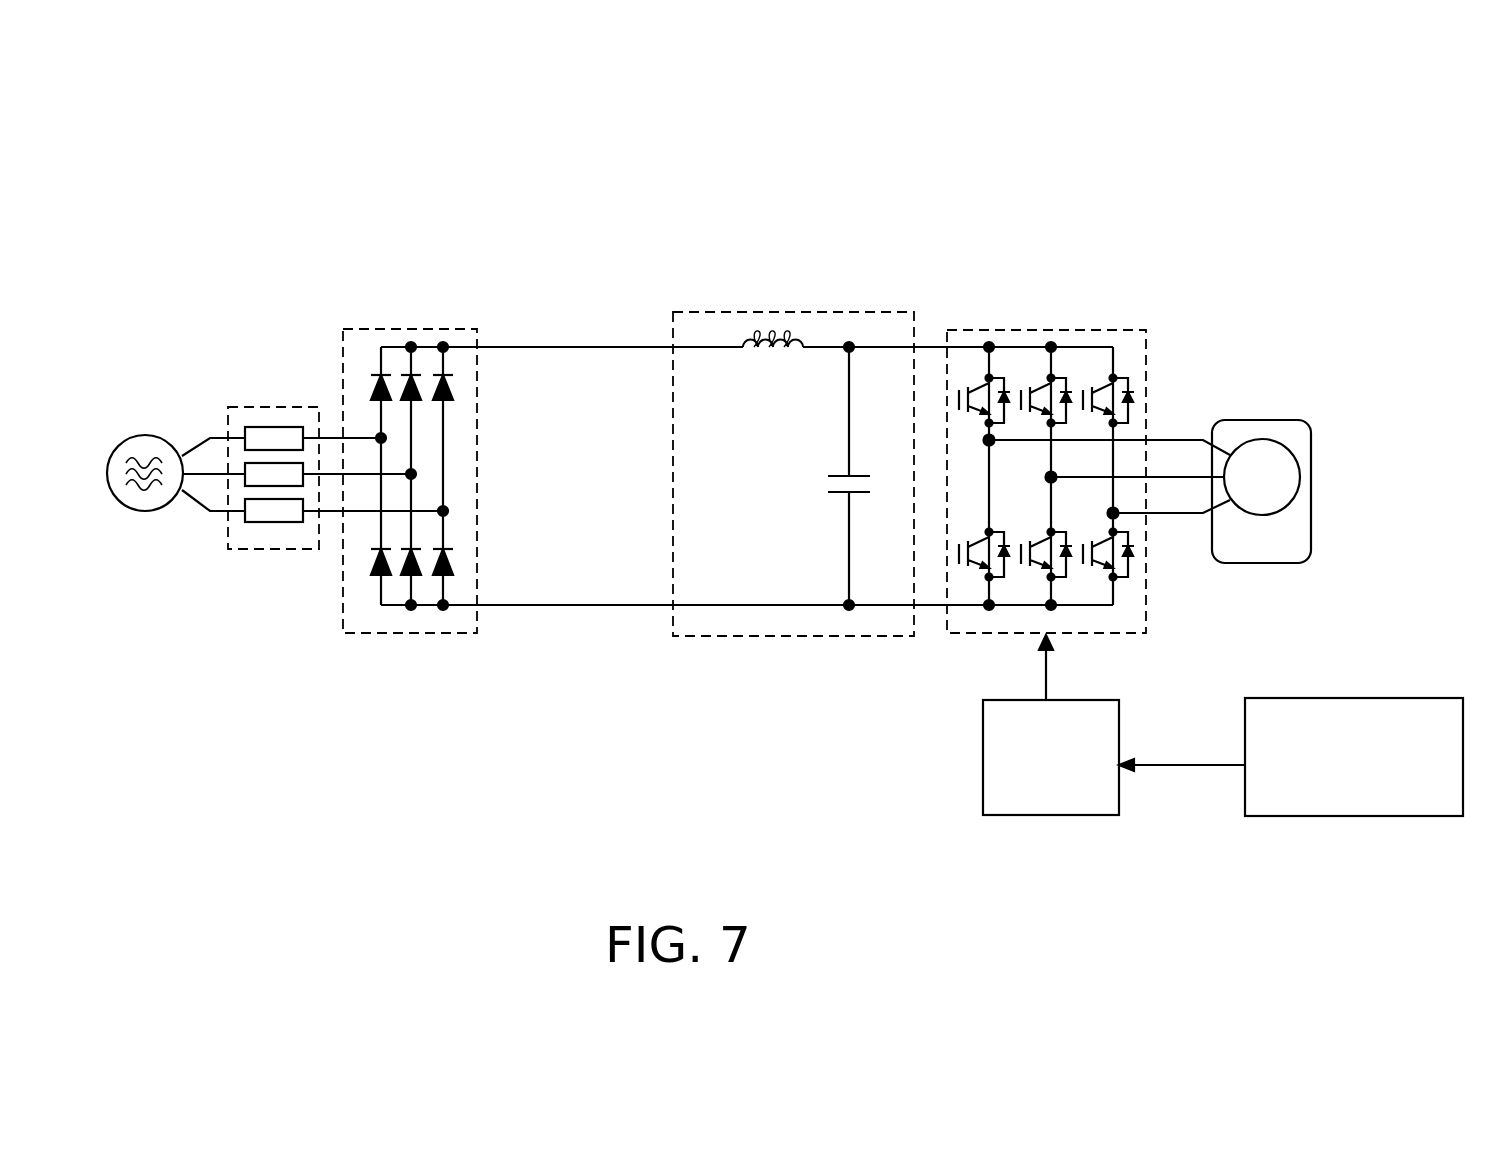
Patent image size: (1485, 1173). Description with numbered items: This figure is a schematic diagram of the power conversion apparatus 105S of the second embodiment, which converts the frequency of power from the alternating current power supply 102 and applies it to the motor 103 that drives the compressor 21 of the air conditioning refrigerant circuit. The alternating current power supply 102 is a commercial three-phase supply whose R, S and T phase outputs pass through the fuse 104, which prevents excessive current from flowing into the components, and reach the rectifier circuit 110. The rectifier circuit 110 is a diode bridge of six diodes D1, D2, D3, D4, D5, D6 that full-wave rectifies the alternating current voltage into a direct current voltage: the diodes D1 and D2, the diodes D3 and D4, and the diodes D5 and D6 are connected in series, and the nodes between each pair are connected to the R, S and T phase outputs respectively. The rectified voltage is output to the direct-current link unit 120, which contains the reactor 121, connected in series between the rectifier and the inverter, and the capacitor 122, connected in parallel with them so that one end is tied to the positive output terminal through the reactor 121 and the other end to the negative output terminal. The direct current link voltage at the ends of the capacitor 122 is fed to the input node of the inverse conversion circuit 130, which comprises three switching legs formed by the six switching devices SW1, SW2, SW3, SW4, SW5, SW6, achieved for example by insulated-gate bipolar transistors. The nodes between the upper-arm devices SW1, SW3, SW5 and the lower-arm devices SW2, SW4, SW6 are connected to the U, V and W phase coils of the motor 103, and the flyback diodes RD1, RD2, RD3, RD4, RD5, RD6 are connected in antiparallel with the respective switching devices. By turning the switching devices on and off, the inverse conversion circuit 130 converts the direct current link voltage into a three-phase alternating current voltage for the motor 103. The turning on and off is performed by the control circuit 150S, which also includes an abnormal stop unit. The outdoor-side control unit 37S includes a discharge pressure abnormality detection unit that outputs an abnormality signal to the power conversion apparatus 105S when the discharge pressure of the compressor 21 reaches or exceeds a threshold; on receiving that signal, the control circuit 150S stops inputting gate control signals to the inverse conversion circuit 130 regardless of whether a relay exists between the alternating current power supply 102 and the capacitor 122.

The alternating current power supply 102 is at (147, 510).
The fuse 104 is at (250, 407).
The rectifier circuit 110 is at (719, 449).
The diode D1 is at (387, 382).
The diode D2 is at (376, 577).
The diode D3 is at (415, 381).
The diode D4 is at (406, 577).
The diode D5 is at (452, 385).
The diode D6 is at (438, 577).
The direct-current link unit 120 is at (793, 425).
The reactor 121 is at (741, 361).
The capacitor 122 is at (832, 507).
The inverse conversion circuit 130 is at (1065, 461).
The switching device SW1 is at (957, 398).
The switching device SW2 is at (958, 555).
The switching device SW3 is at (1027, 396).
The switching device SW4 is at (1022, 556).
The switching device SW5 is at (1093, 396).
The switching device SW6 is at (1090, 560).
The flyback diode RD1 is at (1005, 390).
The flyback diode RD2 is at (1003, 562).
The flyback diode RD3 is at (1067, 390).
The flyback diode RD4 is at (1066, 560).
The flyback diode RD5 is at (1130, 390).
The flyback diode RD6 is at (1128, 560).
The power conversion apparatus 105S is at (1201, 179).
The compressor 21 is at (1274, 499).
The motor 103 is at (1275, 505).
The control circuit 150S is at (1062, 797).
The outdoor-side control unit 37S is at (1352, 797).